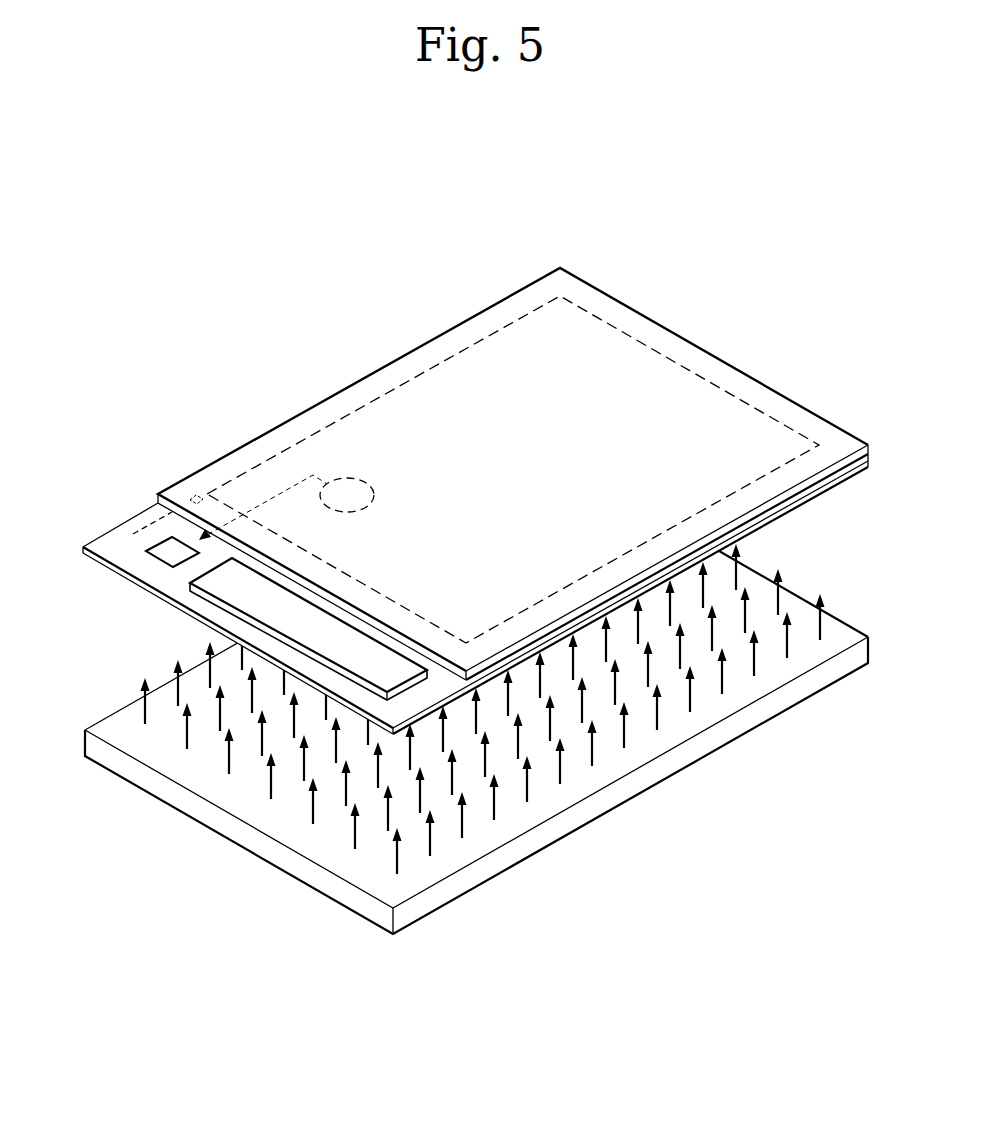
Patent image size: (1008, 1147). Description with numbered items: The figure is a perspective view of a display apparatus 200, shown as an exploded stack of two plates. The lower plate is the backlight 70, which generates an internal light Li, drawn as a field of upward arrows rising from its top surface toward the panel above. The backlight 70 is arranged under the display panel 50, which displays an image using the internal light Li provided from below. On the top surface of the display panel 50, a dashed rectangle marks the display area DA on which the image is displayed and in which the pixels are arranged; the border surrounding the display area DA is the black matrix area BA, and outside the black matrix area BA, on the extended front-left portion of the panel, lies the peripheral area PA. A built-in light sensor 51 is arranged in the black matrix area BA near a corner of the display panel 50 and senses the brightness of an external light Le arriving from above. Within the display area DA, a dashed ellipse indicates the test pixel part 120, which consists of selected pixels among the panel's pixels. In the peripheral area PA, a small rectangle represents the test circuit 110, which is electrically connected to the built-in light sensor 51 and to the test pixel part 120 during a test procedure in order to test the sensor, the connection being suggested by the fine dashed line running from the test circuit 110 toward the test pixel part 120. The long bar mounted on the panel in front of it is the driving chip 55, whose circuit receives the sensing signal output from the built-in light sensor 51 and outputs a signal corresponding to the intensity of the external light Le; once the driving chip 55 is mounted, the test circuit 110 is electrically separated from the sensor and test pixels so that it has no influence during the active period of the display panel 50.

The display apparatus 200 is at (669, 182).
The display panel 50 is at (640, 313).
The built-in light sensor 51 is at (194, 499).
The driving chip 55 is at (237, 588).
The backlight 70 is at (257, 842).
The test circuit 110 is at (152, 546).
The test pixel part 120 is at (349, 478).
The display area DA is at (502, 380).
The black matrix area BA is at (392, 384).
The peripheral area PA is at (131, 545).
The external light Le is at (201, 498).
The internal light Li is at (398, 856).